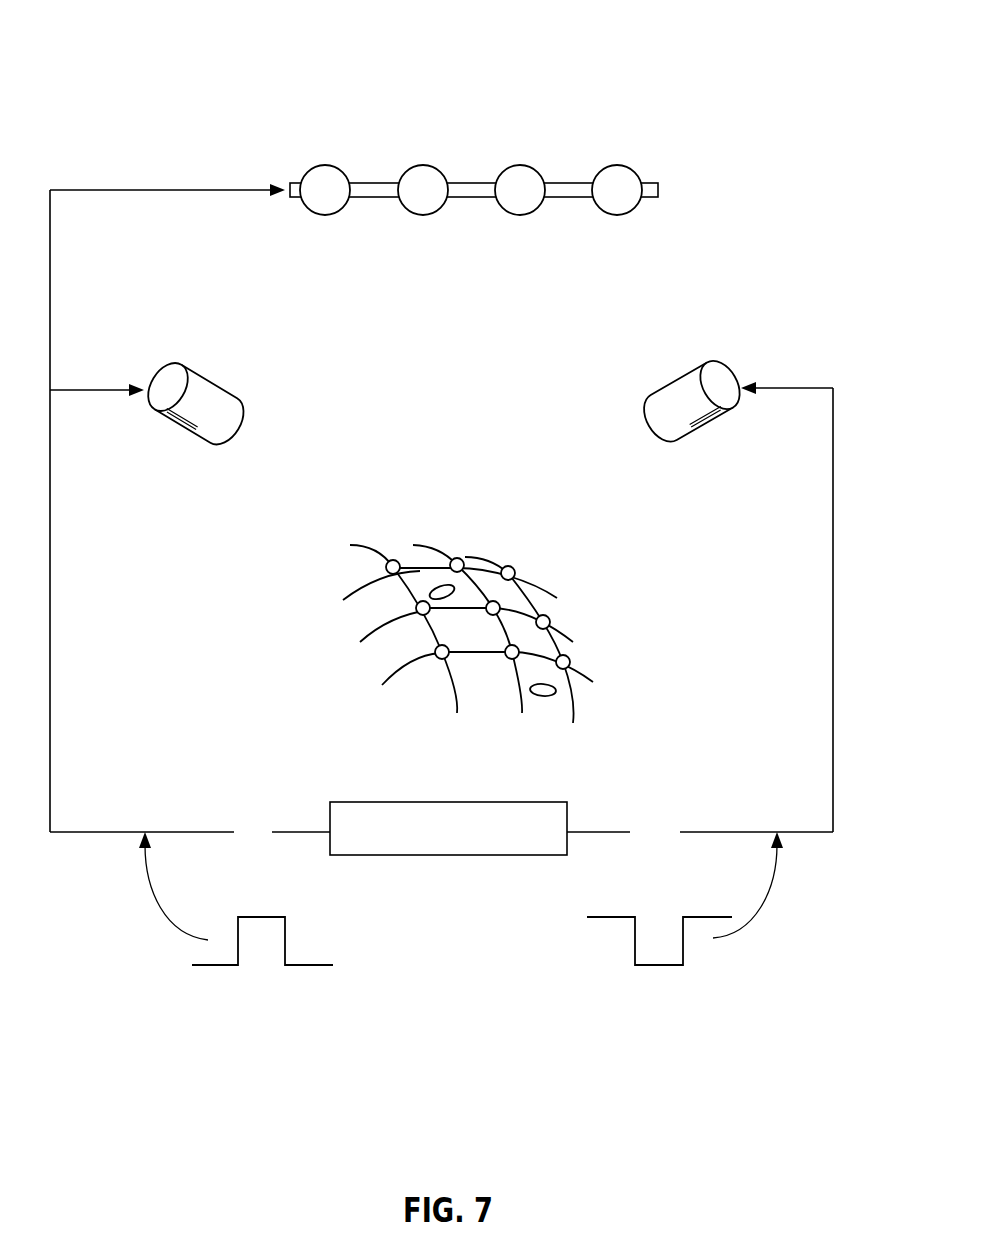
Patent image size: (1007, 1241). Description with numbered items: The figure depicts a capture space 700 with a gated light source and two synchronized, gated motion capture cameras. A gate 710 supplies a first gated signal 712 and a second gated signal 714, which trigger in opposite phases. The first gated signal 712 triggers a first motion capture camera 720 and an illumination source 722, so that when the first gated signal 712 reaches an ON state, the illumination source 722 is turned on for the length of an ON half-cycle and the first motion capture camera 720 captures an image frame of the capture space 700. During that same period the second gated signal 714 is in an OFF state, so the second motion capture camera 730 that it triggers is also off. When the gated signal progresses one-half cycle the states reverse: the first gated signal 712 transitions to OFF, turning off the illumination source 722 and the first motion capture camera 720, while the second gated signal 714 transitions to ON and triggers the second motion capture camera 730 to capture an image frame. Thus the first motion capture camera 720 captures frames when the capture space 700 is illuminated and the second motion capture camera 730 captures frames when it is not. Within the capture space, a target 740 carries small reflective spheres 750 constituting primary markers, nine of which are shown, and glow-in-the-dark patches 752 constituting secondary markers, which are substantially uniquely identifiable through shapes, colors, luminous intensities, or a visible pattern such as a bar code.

The capture space 700 is at (243, 684).
The gate 710 is at (430, 855).
The first gated signal 712 is at (283, 917).
The second gated signal 714 is at (658, 965).
The first motion capture camera 720 is at (225, 387).
The illumination source 722 is at (570, 182).
The second motion capture camera 730 is at (732, 370).
The target 740 is at (556, 532).
The small reflective spheres 750 is at (386, 568).
The glow-in-the-dark patches 752 is at (433, 585).